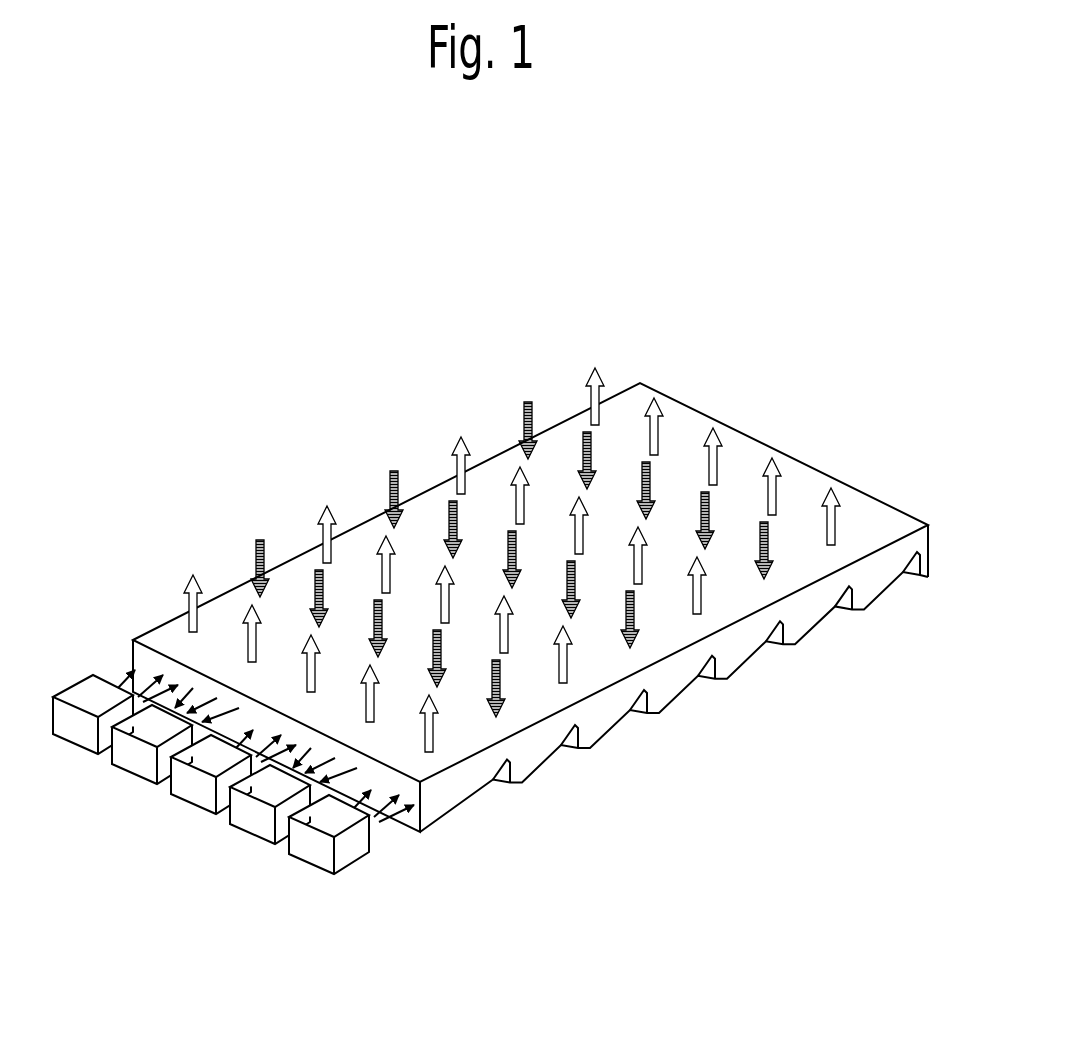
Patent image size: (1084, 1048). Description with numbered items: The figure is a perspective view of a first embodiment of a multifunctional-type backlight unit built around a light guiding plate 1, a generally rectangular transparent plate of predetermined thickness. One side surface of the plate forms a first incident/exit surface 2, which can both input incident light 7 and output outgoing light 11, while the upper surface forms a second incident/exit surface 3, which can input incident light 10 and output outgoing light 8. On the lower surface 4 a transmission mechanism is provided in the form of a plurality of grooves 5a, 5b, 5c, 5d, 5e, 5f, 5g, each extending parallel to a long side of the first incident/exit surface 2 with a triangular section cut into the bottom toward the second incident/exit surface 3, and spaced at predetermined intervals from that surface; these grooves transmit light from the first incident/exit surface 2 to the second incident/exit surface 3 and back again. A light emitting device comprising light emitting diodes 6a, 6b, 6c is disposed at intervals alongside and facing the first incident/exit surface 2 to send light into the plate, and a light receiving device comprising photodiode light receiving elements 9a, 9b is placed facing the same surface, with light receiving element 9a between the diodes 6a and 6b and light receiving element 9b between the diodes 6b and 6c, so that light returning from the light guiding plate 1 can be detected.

The light guiding plate 1 is at (748, 398).
The first incident/exit surface 2 is at (410, 817).
The second incident/exit surface 3 is at (713, 613).
The lower surface 4 is at (445, 827).
The groove 5a is at (503, 793).
The groove 5b is at (570, 748).
The groove 5c is at (638, 713).
The groove 5d is at (705, 679).
The groove 5e is at (773, 645).
The groove 5f is at (841, 610).
The groove 5g is at (910, 576).
The light emitting diode 6a is at (78, 733).
The light emitting diode 6b is at (190, 790).
The light emitting diode 6c is at (307, 848).
The incident light 7 is at (143, 690).
The outgoing light 8 is at (776, 470).
The light receiving element 9a is at (132, 762).
The light receiving element 9b is at (247, 820).
The incident light 10 is at (392, 474).
The outgoing light 11 is at (205, 707).